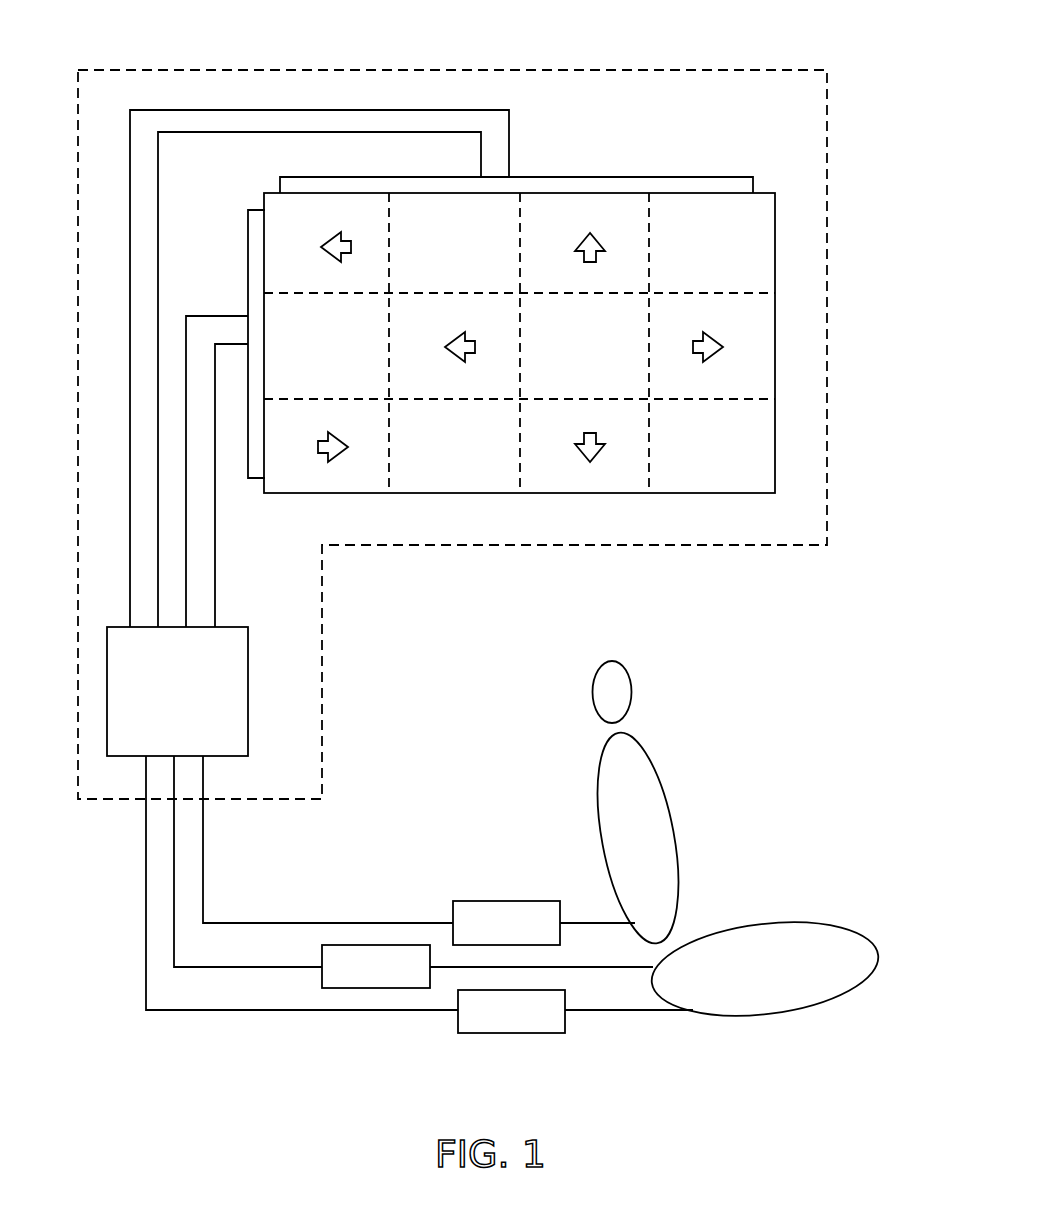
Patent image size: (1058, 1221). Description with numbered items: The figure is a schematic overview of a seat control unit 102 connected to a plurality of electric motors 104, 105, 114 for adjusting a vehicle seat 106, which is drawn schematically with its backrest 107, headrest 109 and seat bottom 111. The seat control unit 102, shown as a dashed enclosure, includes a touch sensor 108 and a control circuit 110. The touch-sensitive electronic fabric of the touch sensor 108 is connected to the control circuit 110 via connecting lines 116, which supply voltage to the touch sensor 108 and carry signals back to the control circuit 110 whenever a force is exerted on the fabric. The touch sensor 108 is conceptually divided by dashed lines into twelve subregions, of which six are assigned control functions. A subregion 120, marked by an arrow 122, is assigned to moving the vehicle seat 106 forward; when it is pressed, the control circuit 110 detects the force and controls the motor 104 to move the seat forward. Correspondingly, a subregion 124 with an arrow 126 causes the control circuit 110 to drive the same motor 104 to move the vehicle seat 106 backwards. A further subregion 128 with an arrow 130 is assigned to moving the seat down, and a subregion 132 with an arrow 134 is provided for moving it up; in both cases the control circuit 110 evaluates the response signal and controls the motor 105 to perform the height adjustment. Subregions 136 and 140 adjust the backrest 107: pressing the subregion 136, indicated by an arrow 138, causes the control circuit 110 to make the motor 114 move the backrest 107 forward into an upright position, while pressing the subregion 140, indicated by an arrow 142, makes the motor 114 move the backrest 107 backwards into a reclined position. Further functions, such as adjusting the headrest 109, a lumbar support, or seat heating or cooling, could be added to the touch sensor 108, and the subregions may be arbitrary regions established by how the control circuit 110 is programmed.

The seat control unit 102 is at (325, 745).
The motor 104 is at (350, 983).
The motor 105 is at (482, 1030).
The vehicle seat 106 is at (733, 882).
The backrest 107 is at (645, 778).
The touch sensor 108 is at (775, 232).
The headrest 109 is at (622, 688).
The control circuit 110 is at (250, 672).
The seat bottom 111 is at (753, 1003).
The motor 114 is at (470, 938).
The connecting lines 116 is at (130, 576).
The subregion 120 is at (740, 378).
The arrow 122 is at (720, 342).
The subregion 124 is at (412, 388).
The arrow 126 is at (473, 353).
The subregion 128 is at (637, 450).
The arrow 130 is at (593, 460).
The subregion 132 is at (542, 210).
The arrow 134 is at (598, 245).
The subregion 136 is at (305, 482).
The arrow 138 is at (345, 448).
The subregion 140 is at (282, 210).
The arrow 142 is at (345, 240).